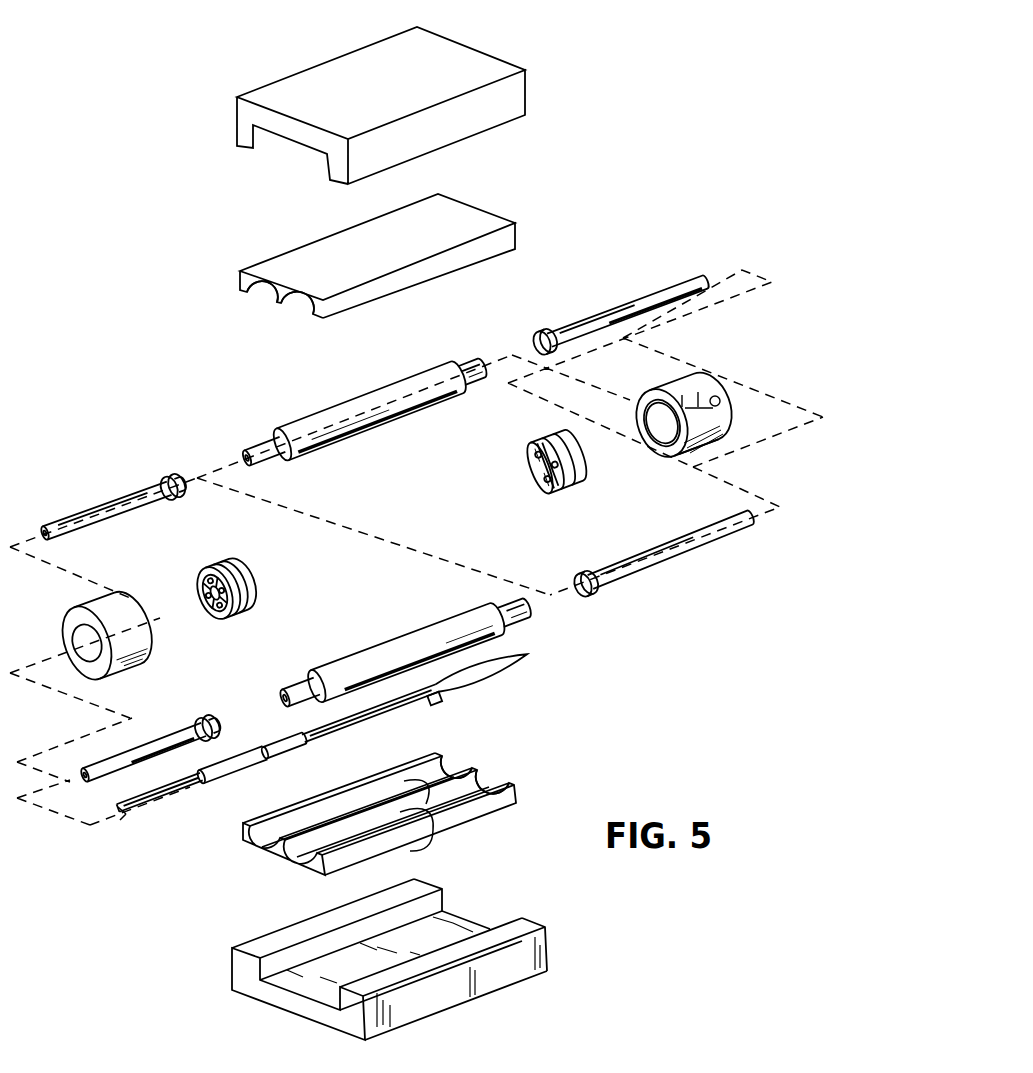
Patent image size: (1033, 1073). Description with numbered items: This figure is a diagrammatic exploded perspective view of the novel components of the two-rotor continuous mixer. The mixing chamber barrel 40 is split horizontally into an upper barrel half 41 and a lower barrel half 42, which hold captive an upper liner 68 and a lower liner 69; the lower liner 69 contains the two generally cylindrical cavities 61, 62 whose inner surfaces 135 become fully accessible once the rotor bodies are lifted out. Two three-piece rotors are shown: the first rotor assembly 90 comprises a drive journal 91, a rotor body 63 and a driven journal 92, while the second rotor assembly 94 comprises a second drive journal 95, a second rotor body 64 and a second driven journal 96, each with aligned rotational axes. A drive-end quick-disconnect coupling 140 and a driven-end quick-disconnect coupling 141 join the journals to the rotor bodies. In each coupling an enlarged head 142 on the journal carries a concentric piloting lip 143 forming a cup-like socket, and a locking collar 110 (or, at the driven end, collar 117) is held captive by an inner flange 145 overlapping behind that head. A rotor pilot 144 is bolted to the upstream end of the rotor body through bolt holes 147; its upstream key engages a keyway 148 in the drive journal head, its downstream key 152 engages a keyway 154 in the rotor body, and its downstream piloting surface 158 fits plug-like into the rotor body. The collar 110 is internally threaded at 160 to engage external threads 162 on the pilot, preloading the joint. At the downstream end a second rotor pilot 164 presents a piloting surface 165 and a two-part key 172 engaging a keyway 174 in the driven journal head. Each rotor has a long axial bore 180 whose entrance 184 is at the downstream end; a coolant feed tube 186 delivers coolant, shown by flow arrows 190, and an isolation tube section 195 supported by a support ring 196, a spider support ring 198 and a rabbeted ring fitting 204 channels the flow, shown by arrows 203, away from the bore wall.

The mixing chamber barrel 40 is at (287, 56).
The upper barrel half 41 is at (390, 96).
The lower barrel half 42 is at (456, 1006).
The cylindrical cavity 61 is at (298, 306).
The cylindrical cavity 62 is at (256, 297).
The rotor body 63 is at (427, 664).
The second rotor body 64 is at (384, 426).
The upper liner 68 is at (385, 261).
The lower liner 69 is at (485, 826).
The three-piece rotor assembly 90 is at (695, 567).
The drive journal 91 is at (645, 564).
The driven journal 92 is at (188, 727).
The second three-piece rotor assembly 94 is at (668, 276).
The second drive journal 95 is at (584, 323).
The second driven journal 96 is at (118, 503).
The locking collar 110 is at (683, 414).
The locking collar 117 is at (107, 635).
The inner surfaces 135 is at (439, 822).
The drive-end quick-disconnect coupling 140 is at (714, 415).
The driven-end quick-disconnect coupling 141 is at (86, 635).
The enlarged head 142 is at (548, 333).
The piloting lip 143 is at (533, 341).
The rotor pilot 144 is at (562, 490).
The inner flange 145 is at (77, 647).
The bolt holes 147 is at (530, 461).
The keyway 148 is at (540, 333).
The downstream key 152 is at (530, 462).
The keyway 154 is at (477, 352).
The downstream piloting surface 158 is at (530, 472).
The internal screw threads 160 is at (641, 441).
The external screw threads 162 is at (556, 437).
The rotor pilot 164 is at (216, 563).
The downstream piloting surface 165 is at (580, 467).
The key 172 is at (207, 607).
The keyway 174 is at (168, 477).
The axial bore 180 is at (242, 456).
The bore entrance 184 is at (44, 530).
The coolant feed tube 186 is at (375, 718).
The coolant flow arrows 190 is at (520, 685).
The isolation tube section 195 is at (207, 791).
The support ring 196 is at (270, 771).
The spider support ring 198 is at (306, 752).
The flow arrows 203 is at (123, 818).
The rabbeted ring fitting 204 is at (293, 761).